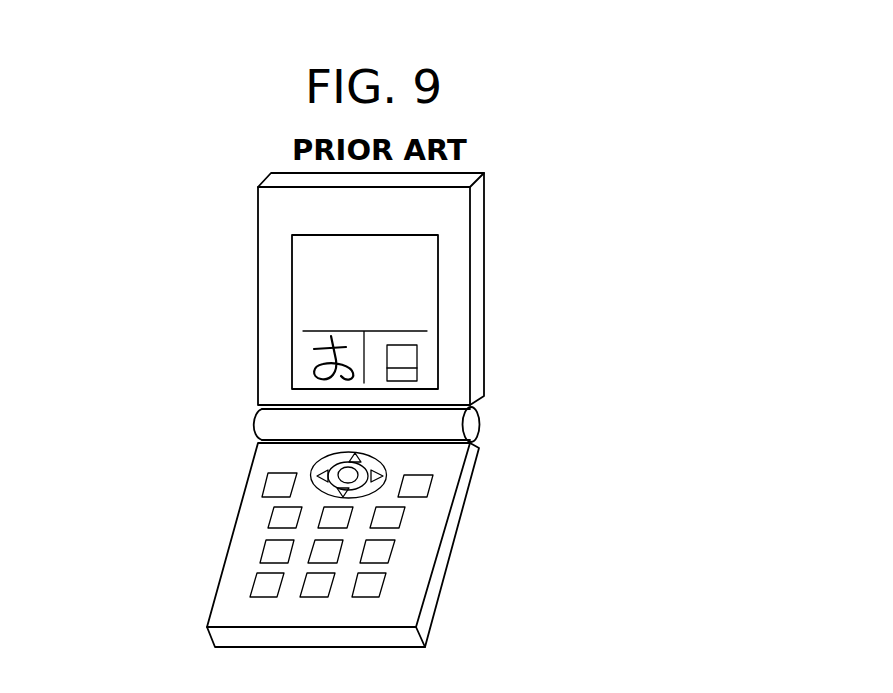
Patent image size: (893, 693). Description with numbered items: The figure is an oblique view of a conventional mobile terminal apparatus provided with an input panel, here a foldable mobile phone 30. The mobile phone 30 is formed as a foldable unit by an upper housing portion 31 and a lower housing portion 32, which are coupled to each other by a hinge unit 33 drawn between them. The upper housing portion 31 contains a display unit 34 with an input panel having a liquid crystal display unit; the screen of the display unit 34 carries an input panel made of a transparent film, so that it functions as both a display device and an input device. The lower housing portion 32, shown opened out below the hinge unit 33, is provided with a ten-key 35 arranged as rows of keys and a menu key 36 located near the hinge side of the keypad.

The mobile phone 30 is at (231, 323).
The upper housing portion 31 is at (485, 225).
The lower housing portion 32 is at (462, 507).
The hinge unit 33 is at (479, 424).
The display unit with an input panel 34 is at (438, 293).
The ten-key 35 is at (387, 582).
The menu key 36 is at (378, 462).